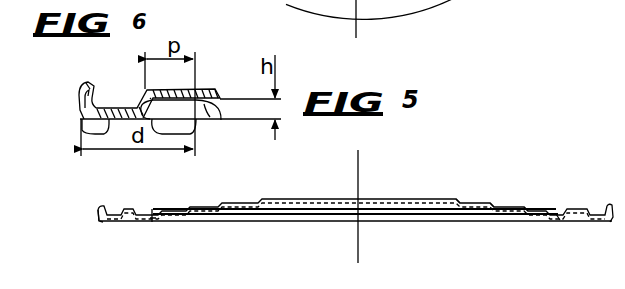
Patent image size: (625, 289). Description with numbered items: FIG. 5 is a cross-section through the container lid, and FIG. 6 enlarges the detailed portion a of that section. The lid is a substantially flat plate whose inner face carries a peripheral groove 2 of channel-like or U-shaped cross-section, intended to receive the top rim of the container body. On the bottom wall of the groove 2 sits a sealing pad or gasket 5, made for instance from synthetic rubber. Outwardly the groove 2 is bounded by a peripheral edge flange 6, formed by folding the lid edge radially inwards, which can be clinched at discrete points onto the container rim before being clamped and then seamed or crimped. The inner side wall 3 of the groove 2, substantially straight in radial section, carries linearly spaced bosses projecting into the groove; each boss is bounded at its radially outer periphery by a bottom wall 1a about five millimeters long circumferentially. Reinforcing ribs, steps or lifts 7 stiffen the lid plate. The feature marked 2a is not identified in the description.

In FIG. 6, the bottom wall 1a is at (198, 134).
In FIG. 5, the peripheral groove 2 is at (113, 206).
In FIG. 6, the disc band with plateau 2a is at (115, 108).
In FIG. 6, the inner side wall 3 is at (208, 104).
In FIG. 5, the inner side wall 3 is at (137, 217).
In FIG. 6, the sealing pad or gasket 5 is at (104, 121).
In FIG. 6, the peripheral edge flange 6 is at (84, 92).
In FIG. 5, the reinforcing ribs, steps or lifts 7 is at (458, 198).
In FIG. 5, the detailed portion a is at (76, 188).